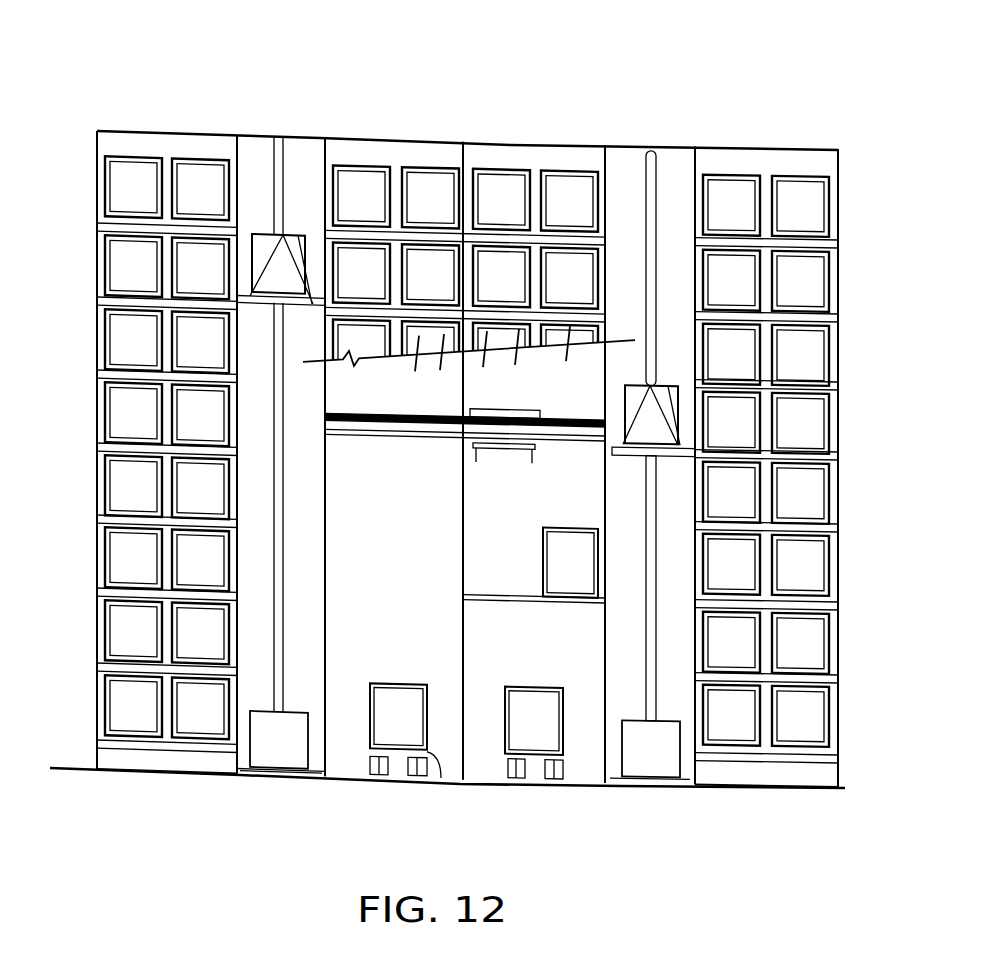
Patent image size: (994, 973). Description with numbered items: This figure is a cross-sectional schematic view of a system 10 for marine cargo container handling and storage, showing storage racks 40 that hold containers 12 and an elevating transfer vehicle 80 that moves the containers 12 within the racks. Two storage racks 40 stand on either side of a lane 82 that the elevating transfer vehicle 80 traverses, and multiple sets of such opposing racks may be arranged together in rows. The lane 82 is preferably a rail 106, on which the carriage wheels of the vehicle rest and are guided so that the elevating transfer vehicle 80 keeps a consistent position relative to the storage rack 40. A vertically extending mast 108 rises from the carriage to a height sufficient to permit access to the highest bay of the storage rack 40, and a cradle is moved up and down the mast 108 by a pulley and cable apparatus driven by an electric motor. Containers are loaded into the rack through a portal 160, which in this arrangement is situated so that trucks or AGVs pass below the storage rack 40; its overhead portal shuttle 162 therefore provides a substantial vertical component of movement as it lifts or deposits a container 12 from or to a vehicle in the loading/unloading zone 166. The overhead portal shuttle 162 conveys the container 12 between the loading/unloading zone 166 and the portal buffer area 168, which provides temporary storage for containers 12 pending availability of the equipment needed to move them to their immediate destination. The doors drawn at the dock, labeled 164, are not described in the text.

The system 10 is at (255, 85).
The container 12 is at (290, 233).
The storage rack 40 is at (150, 147).
The elevating transfer vehicle 80 is at (257, 307).
The lane 82 is at (250, 783).
The rail 106 is at (272, 785).
The mast 108 is at (657, 520).
The portal 160 is at (415, 567).
The overhead portal shuttle 162 is at (540, 410).
The dock door 164 is at (438, 785).
The loading/unloading zone 166 is at (395, 785).
The portal buffer area 168 is at (597, 603).